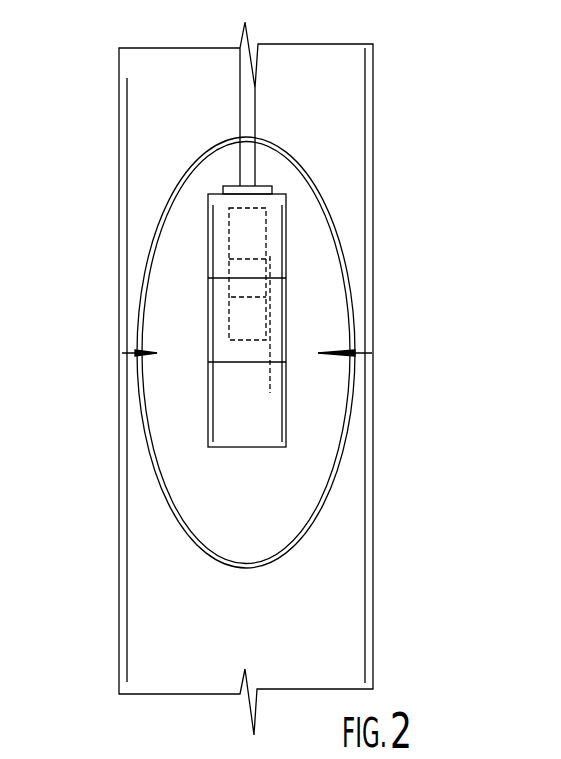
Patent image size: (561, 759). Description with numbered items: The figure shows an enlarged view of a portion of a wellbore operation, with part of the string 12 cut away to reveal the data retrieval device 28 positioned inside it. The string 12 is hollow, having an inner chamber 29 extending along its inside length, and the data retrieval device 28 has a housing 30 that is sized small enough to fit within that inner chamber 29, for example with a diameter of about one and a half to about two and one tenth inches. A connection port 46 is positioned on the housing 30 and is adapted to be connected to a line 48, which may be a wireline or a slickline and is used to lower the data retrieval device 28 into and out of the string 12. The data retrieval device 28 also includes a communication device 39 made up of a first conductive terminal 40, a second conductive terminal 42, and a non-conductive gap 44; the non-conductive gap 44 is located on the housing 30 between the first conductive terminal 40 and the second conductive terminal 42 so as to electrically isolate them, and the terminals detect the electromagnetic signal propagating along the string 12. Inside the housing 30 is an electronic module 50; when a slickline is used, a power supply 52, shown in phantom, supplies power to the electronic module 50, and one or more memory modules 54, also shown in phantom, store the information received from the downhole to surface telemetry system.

The string 12 is at (372, 88).
The line 48 is at (257, 168).
The connection port 46 is at (224, 190).
The housing 30 is at (208, 238).
The first conductive terminal 40 is at (282, 262).
The data retrieval device 28 is at (286, 322).
The power supply 52 is at (229, 268).
The electronic module 50 is at (266, 230).
The memory module 54 is at (229, 340).
The non-conductive gap 44 is at (208, 323).
The second conductive terminal 42 is at (285, 383).
The communication device 39 is at (208, 340).
The inner chamber 29 is at (278, 483).